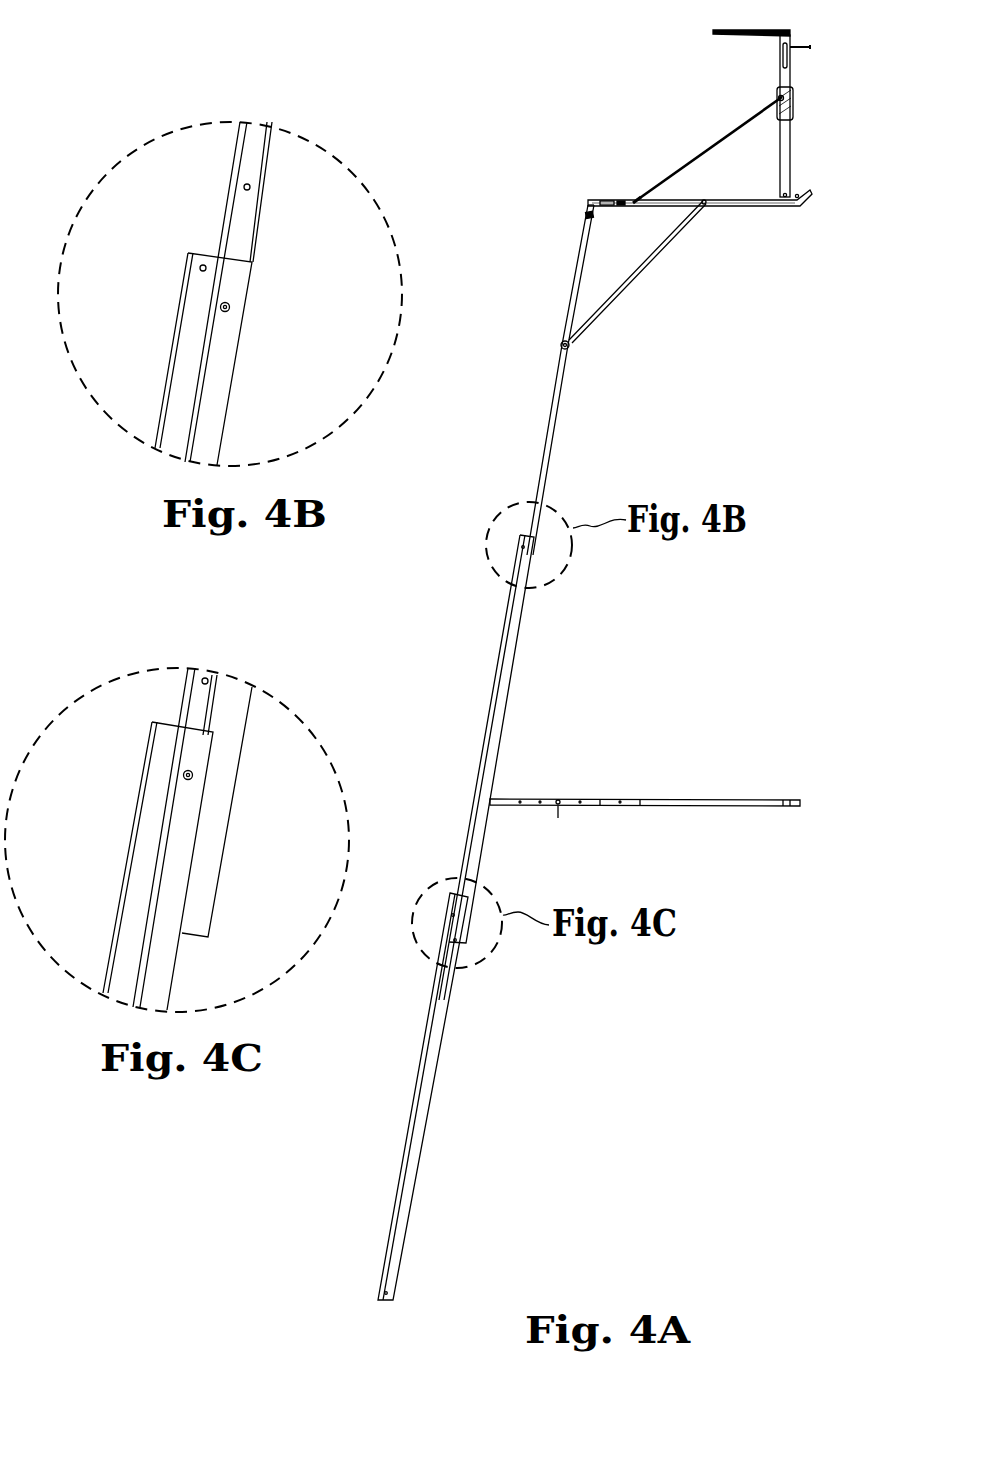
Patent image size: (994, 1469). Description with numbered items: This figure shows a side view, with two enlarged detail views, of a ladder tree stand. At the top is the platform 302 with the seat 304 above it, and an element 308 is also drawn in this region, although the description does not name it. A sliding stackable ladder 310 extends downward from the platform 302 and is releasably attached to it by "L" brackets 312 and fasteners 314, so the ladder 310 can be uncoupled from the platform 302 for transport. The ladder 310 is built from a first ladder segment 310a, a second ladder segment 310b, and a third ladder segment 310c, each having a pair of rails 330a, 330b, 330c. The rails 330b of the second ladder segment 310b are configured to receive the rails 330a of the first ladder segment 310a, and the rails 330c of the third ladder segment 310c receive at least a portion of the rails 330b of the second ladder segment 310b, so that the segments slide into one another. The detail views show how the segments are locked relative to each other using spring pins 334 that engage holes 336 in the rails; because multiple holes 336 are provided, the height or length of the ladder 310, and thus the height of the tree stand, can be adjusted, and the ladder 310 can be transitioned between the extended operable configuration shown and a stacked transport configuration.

In FIG. 4A, the platform 302 is at (747, 207).
In FIG. 4A, the seat 304 is at (766, 32).
In FIG. 4A, the cable 308 is at (708, 149).
In FIG. 4A, the sliding stackable ladder 310 is at (527, 703).
In FIG. 4B, the first ladder segment 310a is at (226, 147).
In FIG. 4B, the second ladder segment 310b is at (162, 388).
In FIG. 4C, the second ladder segment 310b is at (254, 724).
In FIG. 4C, the third ladder segment 310c is at (109, 867).
In FIG. 4A, the "L" bracket 312 is at (588, 202).
In FIG. 4A, the fastener 314 is at (643, 266).
In FIG. 4B, the rails of the first ladder segment 330a is at (274, 148).
In FIG. 4B, the rails of the second ladder segment 330b is at (236, 384).
In FIG. 4C, the rails of the second ladder segment 330b is at (233, 817).
In FIG. 4C, the rails of the third ladder segment 330c is at (178, 972).
In FIG. 4B, the spring pin 334 is at (232, 307).
In FIG. 4C, the spring pin 334 is at (182, 775).
In FIG. 4B, the hole 336 is at (251, 189).
In FIG. 4C, the hole 336 is at (202, 683).